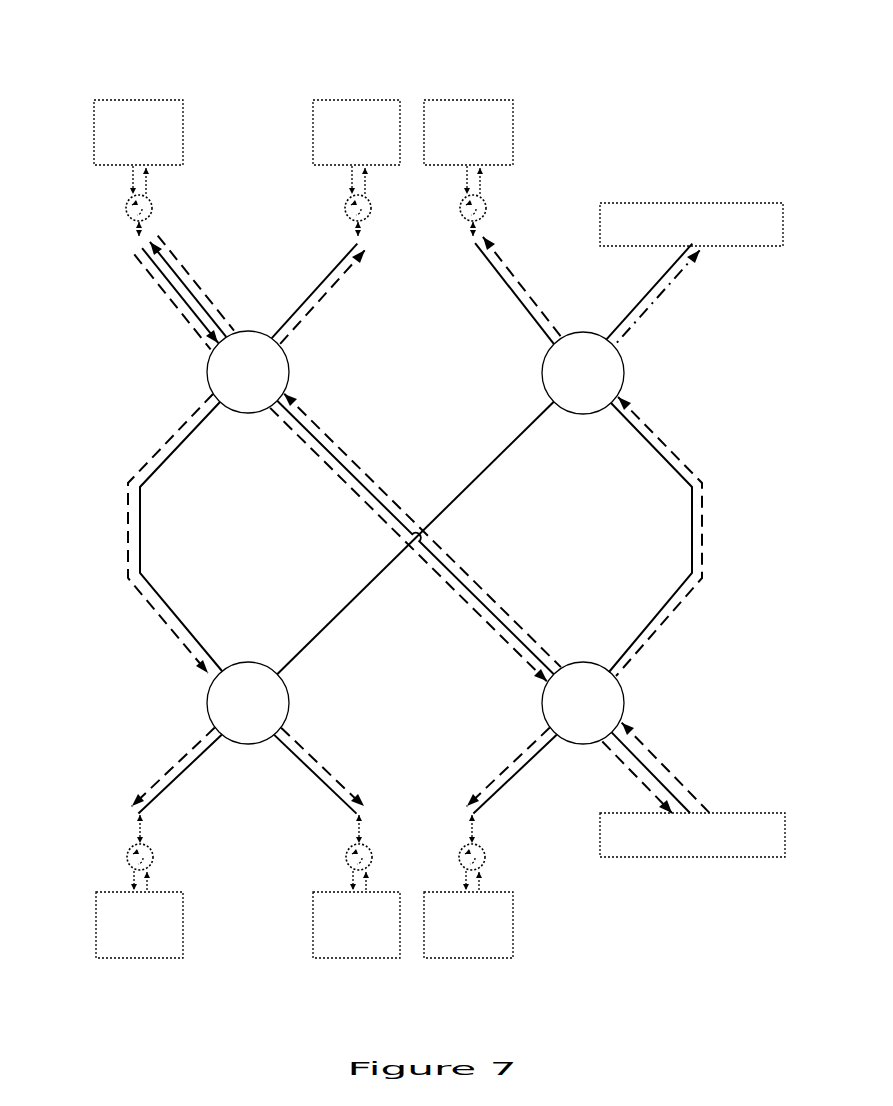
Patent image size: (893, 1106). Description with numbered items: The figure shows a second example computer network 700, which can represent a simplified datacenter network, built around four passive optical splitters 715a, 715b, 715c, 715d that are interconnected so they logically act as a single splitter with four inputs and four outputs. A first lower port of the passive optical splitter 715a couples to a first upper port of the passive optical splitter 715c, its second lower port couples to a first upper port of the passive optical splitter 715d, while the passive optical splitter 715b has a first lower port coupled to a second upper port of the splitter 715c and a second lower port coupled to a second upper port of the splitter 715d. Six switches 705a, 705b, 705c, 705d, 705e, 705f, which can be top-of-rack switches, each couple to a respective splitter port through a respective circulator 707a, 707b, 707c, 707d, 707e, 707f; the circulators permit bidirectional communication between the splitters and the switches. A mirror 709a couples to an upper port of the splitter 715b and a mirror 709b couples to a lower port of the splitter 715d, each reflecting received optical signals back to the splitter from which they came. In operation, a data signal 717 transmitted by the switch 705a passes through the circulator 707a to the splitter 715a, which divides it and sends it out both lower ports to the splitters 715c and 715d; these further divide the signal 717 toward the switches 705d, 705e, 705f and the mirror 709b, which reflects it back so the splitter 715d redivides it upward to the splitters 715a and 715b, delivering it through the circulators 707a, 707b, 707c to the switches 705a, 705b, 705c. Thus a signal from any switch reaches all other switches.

The computer network 700 is at (430, 33).
The switch 705a is at (138, 132).
The switch 705b is at (356, 132).
The switch 705c is at (468, 132).
The switch 705d is at (139, 925).
The switch 705e is at (356, 925).
The switch 705f is at (468, 925).
The circulator 707a is at (124, 209).
The circulator 707b is at (343, 209).
The circulator 707c is at (488, 206).
The circulator 707d is at (126, 857).
The circulator 707e is at (345, 851).
The circulator 707f is at (487, 856).
The mirror 709a is at (691, 224).
The mirror 709b is at (692, 835).
The passive optical splitter 715a is at (248, 372).
The passive optical splitter 715b is at (583, 373).
The passive optical splitter 715c is at (248, 703).
The passive optical splitter 715d is at (583, 703).
The data signal 717 is at (180, 305).